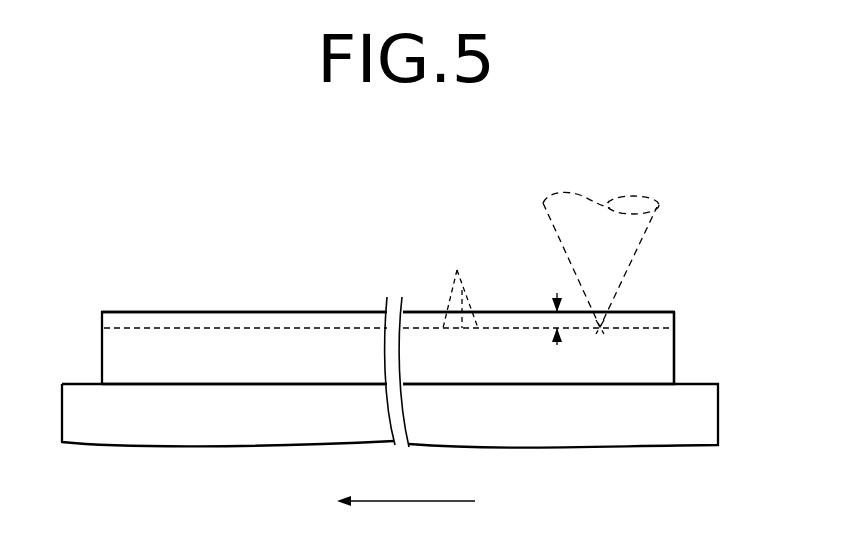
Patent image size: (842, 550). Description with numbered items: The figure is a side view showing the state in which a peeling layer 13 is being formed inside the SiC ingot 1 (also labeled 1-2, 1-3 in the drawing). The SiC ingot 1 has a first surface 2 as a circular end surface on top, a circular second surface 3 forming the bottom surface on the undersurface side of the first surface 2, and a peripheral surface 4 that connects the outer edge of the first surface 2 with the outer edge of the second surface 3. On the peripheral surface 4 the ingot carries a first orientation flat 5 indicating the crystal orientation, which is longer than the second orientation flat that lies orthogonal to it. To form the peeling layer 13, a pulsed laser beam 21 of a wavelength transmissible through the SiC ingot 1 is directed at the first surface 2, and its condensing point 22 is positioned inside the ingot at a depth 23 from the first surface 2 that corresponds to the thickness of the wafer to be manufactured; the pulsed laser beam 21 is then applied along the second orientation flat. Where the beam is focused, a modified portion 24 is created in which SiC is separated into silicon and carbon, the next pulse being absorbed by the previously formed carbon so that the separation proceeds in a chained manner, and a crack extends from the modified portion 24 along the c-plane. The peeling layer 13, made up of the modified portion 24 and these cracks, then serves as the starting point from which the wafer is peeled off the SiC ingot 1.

The SiC ingot 1 is at (365, 364).
The workpiece (second example) 1-2 is at (365, 364).
The workpiece (third example) 1-3 is at (365, 364).
The first surface 2 is at (227, 311).
The second surface 3 is at (557, 387).
The peripheral surface 4 is at (243, 366).
The first orientation flat 5 is at (675, 362).
The peeling layer 13 is at (521, 320).
The pulsed laser beam 21 is at (637, 255).
The condensing point 22 is at (600, 327).
The depth 23 is at (557, 318).
The modified portion 24 is at (459, 286).